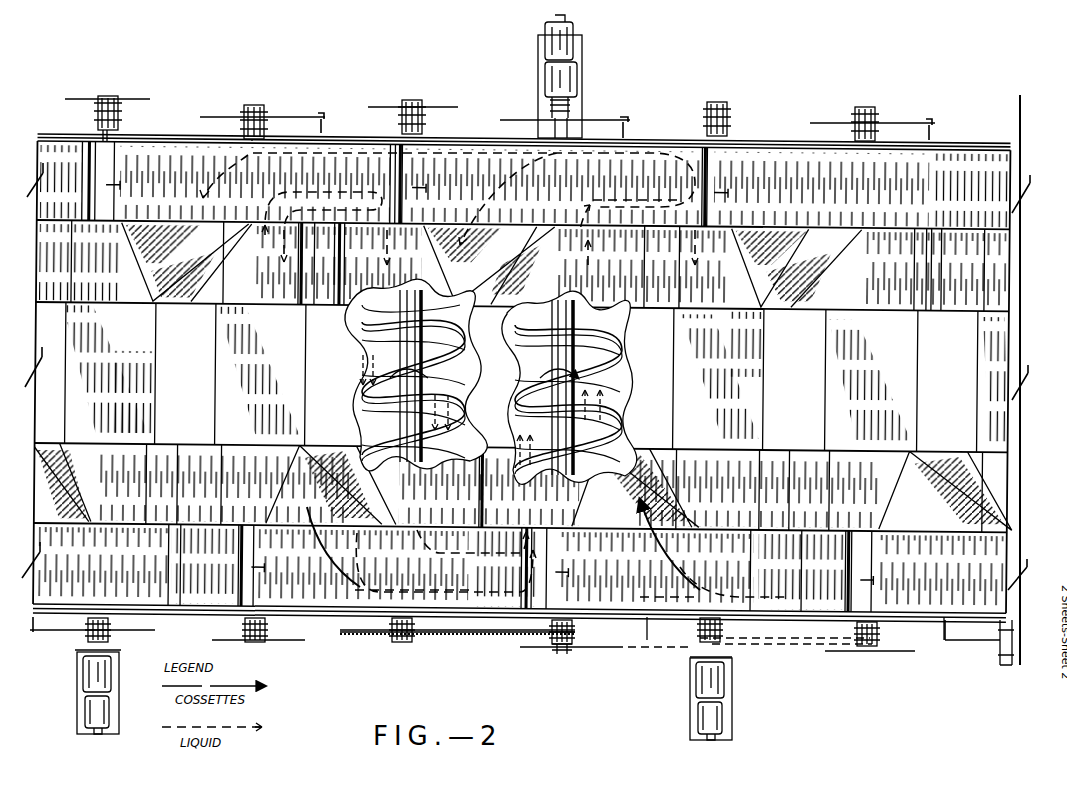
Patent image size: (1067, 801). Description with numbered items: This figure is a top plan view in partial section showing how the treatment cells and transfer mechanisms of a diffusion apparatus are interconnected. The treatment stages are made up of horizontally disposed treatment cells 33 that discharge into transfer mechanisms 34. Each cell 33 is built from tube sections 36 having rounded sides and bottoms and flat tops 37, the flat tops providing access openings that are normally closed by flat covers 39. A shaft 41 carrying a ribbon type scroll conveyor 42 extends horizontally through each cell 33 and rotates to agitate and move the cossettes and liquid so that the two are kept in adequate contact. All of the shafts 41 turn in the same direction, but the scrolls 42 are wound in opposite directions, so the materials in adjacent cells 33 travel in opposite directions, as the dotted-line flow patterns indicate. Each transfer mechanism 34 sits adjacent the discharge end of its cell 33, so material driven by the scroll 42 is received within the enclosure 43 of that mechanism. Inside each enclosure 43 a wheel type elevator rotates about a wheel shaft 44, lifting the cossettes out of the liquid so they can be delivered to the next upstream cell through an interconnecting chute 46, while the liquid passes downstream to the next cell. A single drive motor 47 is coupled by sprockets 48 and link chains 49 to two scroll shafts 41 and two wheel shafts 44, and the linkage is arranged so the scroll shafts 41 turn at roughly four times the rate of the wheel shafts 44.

The treatment cell 33 is at (892, 286).
The transfer mechanism 34 is at (919, 189).
The tube section 36 is at (942, 286).
The flat top 37 is at (850, 485).
The flat cover 39 is at (860, 376).
The shaft 41 is at (418, 330).
The ribbon type scroll conveyor 42 is at (353, 345).
The enclosure 43 is at (1008, 178).
The wheel shaft 44 is at (874, 118).
The interconnecting chute 46 is at (825, 258).
The drive motor 47 is at (580, 68).
The sprocket 48 is at (597, 118).
The link chain 49 is at (466, 641).